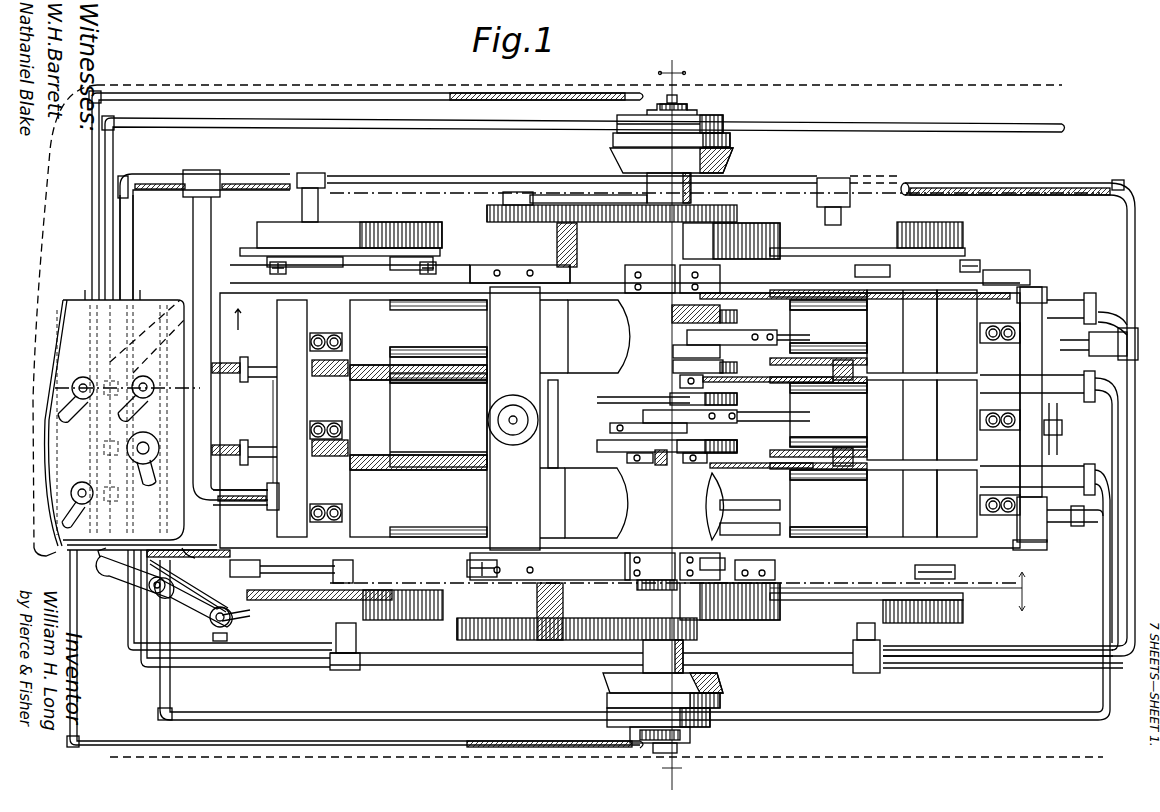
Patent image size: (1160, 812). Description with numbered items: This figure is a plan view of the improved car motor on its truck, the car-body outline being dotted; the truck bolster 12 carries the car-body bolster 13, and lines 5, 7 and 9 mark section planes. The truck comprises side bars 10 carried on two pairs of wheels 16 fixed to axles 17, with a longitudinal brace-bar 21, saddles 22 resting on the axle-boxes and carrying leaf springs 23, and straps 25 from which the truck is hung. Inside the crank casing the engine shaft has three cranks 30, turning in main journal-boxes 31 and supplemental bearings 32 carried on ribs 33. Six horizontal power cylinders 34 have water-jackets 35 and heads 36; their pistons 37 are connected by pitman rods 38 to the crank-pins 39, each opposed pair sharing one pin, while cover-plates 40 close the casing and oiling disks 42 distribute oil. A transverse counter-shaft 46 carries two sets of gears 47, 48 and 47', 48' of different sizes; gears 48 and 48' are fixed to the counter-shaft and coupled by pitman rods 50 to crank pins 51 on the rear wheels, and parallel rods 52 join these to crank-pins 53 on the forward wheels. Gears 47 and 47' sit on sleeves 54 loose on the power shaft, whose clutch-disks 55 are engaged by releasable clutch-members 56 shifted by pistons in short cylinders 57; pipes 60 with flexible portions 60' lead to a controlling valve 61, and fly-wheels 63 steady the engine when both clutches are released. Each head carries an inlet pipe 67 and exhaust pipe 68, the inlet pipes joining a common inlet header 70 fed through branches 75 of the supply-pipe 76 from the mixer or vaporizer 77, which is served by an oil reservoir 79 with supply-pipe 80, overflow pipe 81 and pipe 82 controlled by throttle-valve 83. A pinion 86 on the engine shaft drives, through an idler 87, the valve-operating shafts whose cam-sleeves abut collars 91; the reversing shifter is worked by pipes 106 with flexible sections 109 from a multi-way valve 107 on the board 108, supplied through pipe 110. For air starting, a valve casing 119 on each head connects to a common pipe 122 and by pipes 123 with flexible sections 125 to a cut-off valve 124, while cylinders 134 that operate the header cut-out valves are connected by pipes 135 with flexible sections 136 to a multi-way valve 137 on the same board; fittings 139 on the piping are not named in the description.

The section line 5— 5 is at (1104, 338).
The section line 7— 7 is at (672, 418).
The section line 9— 9 is at (907, 591).
The side bars 10 is at (510, 546).
The bolster 12 is at (515, 386).
The bolster 13 is at (1124, 315).
The wheels 16 is at (370, 227).
The axles 17 is at (873, 263).
The brace-bar 21 is at (277, 305).
The saddles 22 is at (395, 330).
The leaf springs 23 is at (405, 308).
The straps 25 is at (300, 258).
The cranks 30 is at (722, 306).
The main journal-boxes 31 is at (712, 297).
The supplemental bearings 32 is at (740, 397).
The ribs 33 is at (740, 383).
The power cylinders 34 is at (440, 395).
The water-jackets 35 is at (915, 470).
The heads 36 is at (669, 413).
The pistons 37 is at (830, 413).
The pitman rods 38 is at (588, 420).
The crank-pins 39 is at (690, 432).
The cover-plates 40 is at (585, 419).
The disks 42 is at (708, 503).
The counter-shaft 46 is at (577, 259).
The gear 47 is at (594, 629).
The gear 47' is at (633, 207).
The gear 48 is at (436, 629).
The gear 48' is at (467, 213).
The pitman rods 50 is at (812, 188).
The crank pins 51 is at (845, 214).
The parallel rods 52 is at (498, 178).
The crank-pins 53 is at (335, 182).
The sleeves 54 is at (700, 186).
The clutch-disks 55 is at (735, 161).
The releasable clutch-members 56 is at (725, 136).
The short cylinders 57 is at (725, 121).
The pipes 60 is at (355, 423).
The flexible portions 60' is at (541, 423).
The controlling valve 61 is at (55, 505).
The fly-wheels 63 is at (658, 431).
The inlet pipe 67 is at (1064, 374).
The exhaust pipe 68 is at (1080, 282).
The inlet header 70 is at (1050, 287).
The branches 75 is at (985, 188).
The supply-pipe 76 is at (133, 232).
The mixer or vaporizer 77 is at (152, 595).
The oil reservoir 79 is at (232, 625).
The supply-pipe 80 is at (213, 637).
The overflow pipe 81 is at (250, 613).
The pipe 82 is at (291, 571).
The throttle-valve 83 is at (185, 558).
The pinion 86 is at (655, 592).
The idler 87 is at (728, 601).
The collars 91 is at (597, 447).
The pipes 106 is at (232, 259).
The controlling valve 107 is at (80, 377).
The board 108 is at (85, 298).
The flexible sections 109 is at (140, 300).
The pipe 110 is at (118, 186).
The valve casing 119 is at (310, 345).
The common pipe 122 is at (267, 490).
The pipes 123 is at (1112, 618).
The controlling valve 124 is at (148, 377).
The flexible sections 125 is at (1100, 530).
The cylinders 134 is at (1104, 457).
The pipes 135 is at (1112, 664).
The flexible sections 136 is at (1100, 438).
The controlling valve 137 is at (150, 426).
The elbow fitting 139 is at (268, 362).